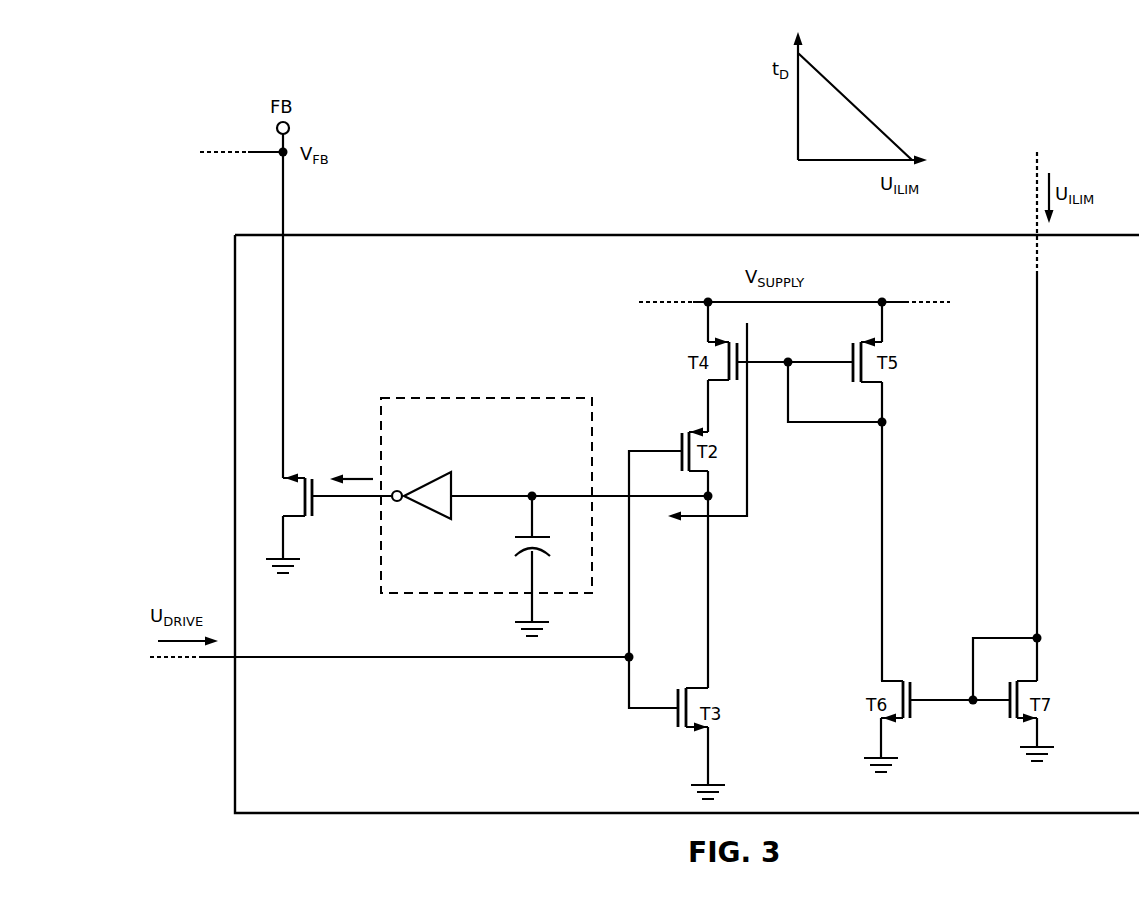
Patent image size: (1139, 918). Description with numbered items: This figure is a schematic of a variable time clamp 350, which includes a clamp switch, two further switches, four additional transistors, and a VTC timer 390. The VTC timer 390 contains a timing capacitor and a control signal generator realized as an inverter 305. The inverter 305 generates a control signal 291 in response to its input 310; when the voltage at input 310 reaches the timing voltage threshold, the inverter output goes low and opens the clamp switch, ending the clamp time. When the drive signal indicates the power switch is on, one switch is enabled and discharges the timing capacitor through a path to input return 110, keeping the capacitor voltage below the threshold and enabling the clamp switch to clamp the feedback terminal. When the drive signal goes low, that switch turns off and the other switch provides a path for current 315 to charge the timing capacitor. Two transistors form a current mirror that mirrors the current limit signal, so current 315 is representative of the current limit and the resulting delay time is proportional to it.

The variable time clamp (VTC) 350 is at (477, 235).
The VTC timer 390 is at (555, 397).
The inverter 305 is at (420, 480).
The input 310 is at (462, 488).
The control signal 291 is at (364, 470).
The current 315 is at (758, 490).
The input return 110 is at (300, 567).